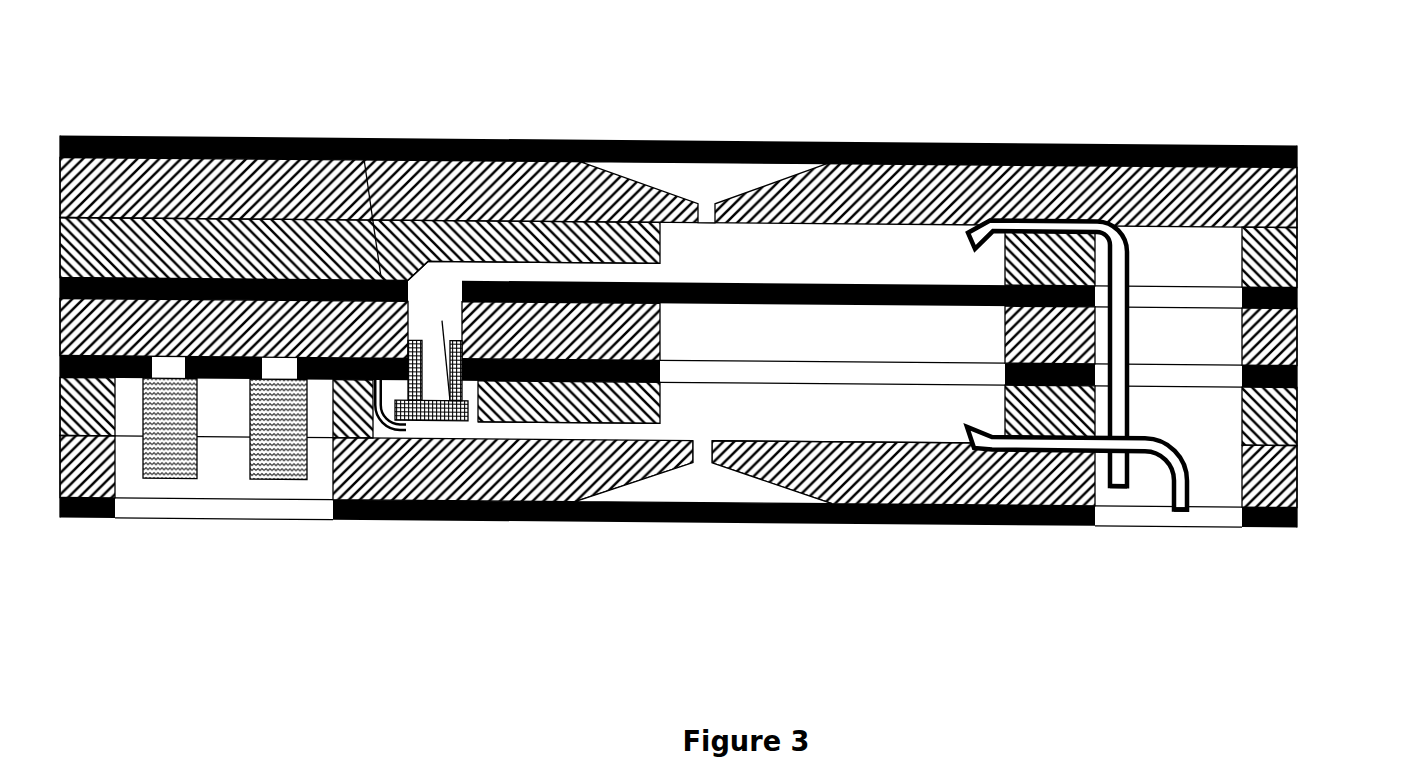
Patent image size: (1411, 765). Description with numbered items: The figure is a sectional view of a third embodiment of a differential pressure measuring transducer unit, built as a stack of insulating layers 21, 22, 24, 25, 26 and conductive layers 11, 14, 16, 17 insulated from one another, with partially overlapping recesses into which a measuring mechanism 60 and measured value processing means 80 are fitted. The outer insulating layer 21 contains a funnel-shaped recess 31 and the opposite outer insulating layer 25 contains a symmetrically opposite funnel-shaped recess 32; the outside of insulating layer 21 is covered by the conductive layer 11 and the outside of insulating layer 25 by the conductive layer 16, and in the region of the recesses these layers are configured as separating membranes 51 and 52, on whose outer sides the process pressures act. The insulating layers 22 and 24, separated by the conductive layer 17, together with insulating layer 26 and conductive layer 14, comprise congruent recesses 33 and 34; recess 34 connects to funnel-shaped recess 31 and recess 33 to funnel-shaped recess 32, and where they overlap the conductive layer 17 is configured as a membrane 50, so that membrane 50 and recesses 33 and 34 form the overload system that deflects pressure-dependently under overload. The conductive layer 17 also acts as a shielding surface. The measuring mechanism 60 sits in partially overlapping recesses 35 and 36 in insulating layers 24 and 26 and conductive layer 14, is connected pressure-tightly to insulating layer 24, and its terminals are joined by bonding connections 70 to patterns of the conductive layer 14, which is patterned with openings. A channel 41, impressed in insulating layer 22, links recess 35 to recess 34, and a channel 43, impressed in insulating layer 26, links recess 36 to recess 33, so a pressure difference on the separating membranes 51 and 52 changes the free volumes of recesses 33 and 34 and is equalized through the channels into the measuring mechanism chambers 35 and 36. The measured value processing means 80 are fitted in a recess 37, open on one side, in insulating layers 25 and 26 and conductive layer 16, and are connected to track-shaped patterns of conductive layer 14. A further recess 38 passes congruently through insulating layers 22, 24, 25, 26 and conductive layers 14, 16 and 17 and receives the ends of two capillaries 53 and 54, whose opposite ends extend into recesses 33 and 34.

The conductive layer 11 is at (1298, 143).
The insulating layer 21 is at (1298, 185).
The insulating layer 22 is at (1298, 258).
The conductive layer 17 is at (1298, 295).
The insulating layer 24 is at (1298, 333).
The conductive layer 14 is at (1298, 373).
The insulating layer 26 is at (1298, 413).
The insulating layer 25 is at (1298, 495).
The conductive layer 16 is at (1298, 520).
The bonding connections 70 is at (361, 138).
The channel 41 is at (568, 272).
The funnel-shaped recess 31 is at (697, 182).
The separating membrane 51 is at (733, 140).
The recess 34 is at (858, 272).
The membrane 50 is at (913, 285).
The recess 37 is at (220, 477).
The measured value processing means 80 is at (297, 477).
The measuring mechanism 60 is at (405, 430).
The recess 36 is at (445, 427).
The recess 35 is at (462, 420).
The channel 43 is at (515, 430).
The recess 33 is at (713, 423).
The funnel-shaped recess 32 is at (712, 480).
The separating membrane 52 is at (765, 515).
The capillary 53 is at (1120, 487).
The capillary 54 is at (1177, 488).
The recess 38 is at (1222, 467).